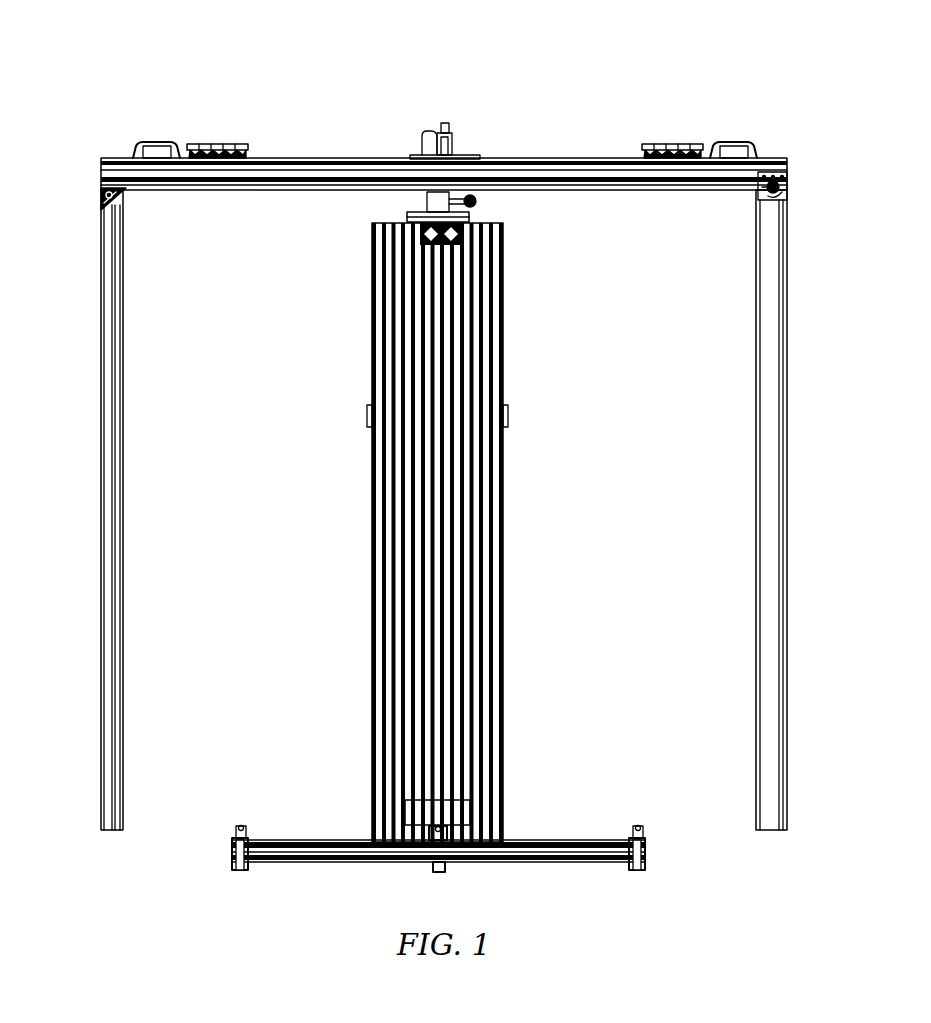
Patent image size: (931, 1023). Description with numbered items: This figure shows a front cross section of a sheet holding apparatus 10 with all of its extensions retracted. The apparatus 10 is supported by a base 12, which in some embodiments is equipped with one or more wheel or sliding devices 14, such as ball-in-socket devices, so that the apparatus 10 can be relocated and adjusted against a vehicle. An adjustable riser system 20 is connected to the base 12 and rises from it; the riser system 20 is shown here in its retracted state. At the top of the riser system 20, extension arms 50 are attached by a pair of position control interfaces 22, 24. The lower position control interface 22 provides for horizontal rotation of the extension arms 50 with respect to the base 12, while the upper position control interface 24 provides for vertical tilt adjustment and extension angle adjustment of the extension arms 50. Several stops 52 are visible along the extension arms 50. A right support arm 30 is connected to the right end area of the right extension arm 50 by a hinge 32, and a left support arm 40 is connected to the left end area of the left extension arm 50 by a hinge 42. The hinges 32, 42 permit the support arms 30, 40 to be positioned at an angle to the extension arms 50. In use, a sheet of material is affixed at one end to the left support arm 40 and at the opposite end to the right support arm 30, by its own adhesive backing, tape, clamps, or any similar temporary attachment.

The sheet holding apparatus 10 is at (744, 92).
The base 12 is at (560, 840).
The wheel or sliding devices 14 is at (243, 826).
The adjustable riser system 20 is at (516, 501).
The lower position control interface 22 is at (432, 201).
The upper position control interface 24 is at (432, 138).
The right support arm 30 is at (801, 284).
The hinge 32 is at (790, 188).
The left support arm 40 is at (89, 288).
The hinge 42 is at (104, 193).
The extension arms 50 is at (588, 143).
The stops 52 is at (189, 144).